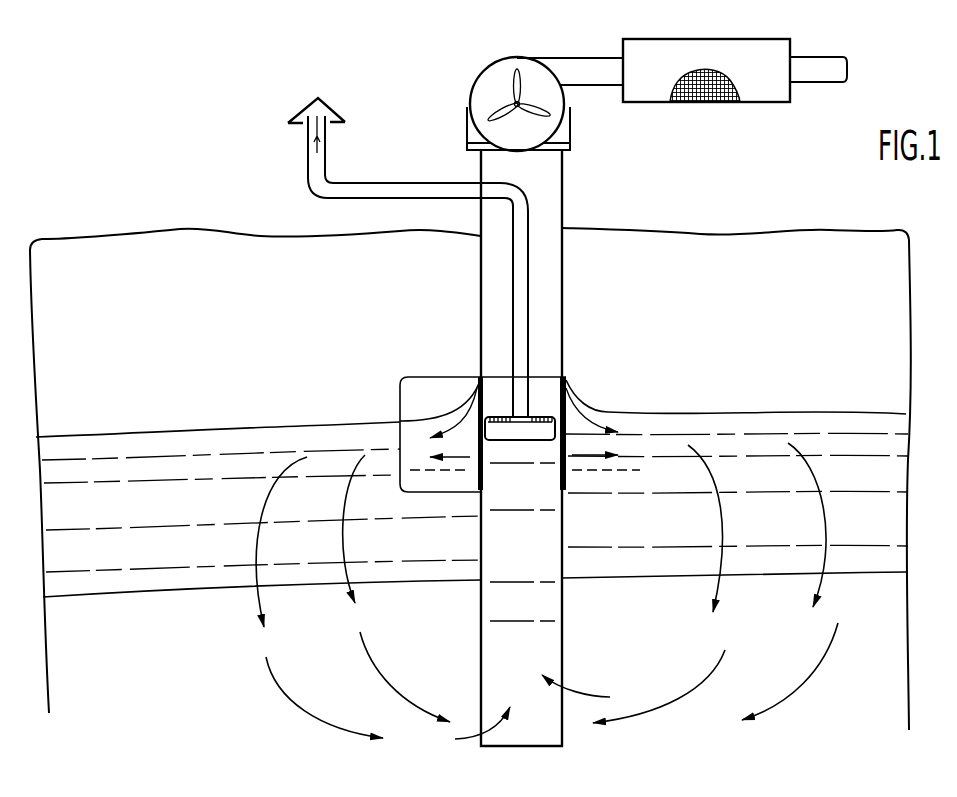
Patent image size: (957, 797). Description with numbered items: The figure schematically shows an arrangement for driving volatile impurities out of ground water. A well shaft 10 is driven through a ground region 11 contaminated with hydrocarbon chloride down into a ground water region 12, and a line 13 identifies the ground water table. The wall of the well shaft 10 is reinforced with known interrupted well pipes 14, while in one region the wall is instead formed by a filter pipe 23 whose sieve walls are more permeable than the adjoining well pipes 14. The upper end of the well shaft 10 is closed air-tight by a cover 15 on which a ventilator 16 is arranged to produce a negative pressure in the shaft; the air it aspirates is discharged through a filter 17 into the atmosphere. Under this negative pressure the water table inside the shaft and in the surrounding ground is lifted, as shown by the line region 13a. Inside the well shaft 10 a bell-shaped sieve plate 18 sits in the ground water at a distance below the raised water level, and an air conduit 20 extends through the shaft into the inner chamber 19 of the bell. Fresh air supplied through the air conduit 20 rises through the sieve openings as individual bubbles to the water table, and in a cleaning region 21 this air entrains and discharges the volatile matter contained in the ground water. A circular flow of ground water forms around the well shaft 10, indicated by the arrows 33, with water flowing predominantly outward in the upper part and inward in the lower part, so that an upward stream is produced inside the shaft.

The well shaft 10 is at (545, 308).
The ground region 11 is at (237, 343).
The ground water region 12 is at (133, 672).
The line identifying the ground water table 13 is at (129, 436).
The line region 13a is at (608, 412).
The well pipes 14 is at (561, 334).
The cover 15 is at (569, 152).
The ventilator 16 is at (480, 83).
The filter 17 is at (708, 101).
The bell-shaped sieve plate 18 is at (508, 416).
The inner chamber of the bell 19 is at (518, 441).
The air conduit 20 is at (403, 190).
The cleaning region 21 is at (567, 385).
The filter pipe 23 is at (570, 458).
The arrow 33 is at (255, 603).